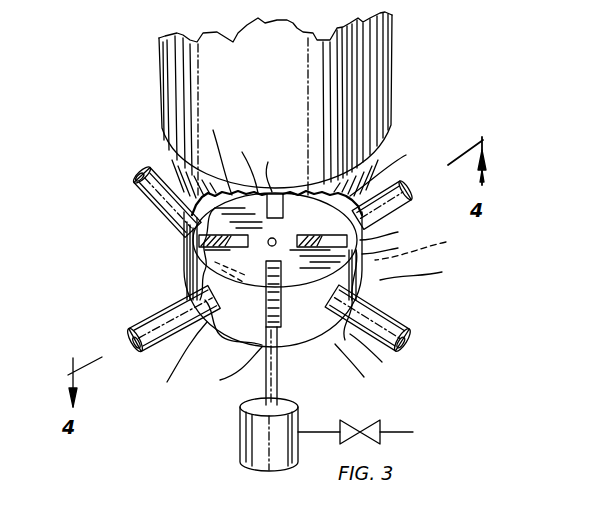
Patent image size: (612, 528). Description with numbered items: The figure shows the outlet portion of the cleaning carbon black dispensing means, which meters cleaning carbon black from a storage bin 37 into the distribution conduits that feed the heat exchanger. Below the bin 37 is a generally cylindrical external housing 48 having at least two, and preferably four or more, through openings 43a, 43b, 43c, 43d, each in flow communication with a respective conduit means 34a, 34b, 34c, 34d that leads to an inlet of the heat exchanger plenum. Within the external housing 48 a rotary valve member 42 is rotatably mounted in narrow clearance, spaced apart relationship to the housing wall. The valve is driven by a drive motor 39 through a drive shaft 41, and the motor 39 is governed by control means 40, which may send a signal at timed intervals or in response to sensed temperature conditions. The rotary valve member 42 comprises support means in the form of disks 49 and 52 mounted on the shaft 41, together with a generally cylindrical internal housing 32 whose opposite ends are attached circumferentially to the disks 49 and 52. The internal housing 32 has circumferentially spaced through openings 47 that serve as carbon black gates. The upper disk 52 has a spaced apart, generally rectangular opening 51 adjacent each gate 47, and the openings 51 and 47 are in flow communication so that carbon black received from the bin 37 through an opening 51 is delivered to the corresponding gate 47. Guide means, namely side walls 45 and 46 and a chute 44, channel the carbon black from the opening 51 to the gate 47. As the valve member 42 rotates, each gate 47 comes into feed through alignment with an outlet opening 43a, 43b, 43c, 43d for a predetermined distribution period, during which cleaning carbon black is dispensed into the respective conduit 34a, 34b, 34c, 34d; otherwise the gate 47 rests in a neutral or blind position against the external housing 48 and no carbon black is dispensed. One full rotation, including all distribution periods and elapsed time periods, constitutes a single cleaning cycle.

The internal housing 32 is at (363, 368).
The conduit means 34a is at (130, 330).
The conduit means 34b is at (392, 317).
The conduit means 34c is at (400, 190).
The conduit means 34d is at (152, 208).
The bin 37 is at (392, 82).
The drive motor 39 is at (240, 433).
The control means 40 is at (385, 427).
The drive shaft 41 is at (275, 240).
The rotary valve member 42 is at (252, 300).
The through opening 43a is at (168, 360).
The through opening 43b is at (430, 268).
The through opening 43c is at (427, 245).
The through opening 43d is at (220, 149).
The chute 44 is at (199, 245).
The side wall 45 is at (342, 256).
The side wall 46 is at (308, 312).
The through opening 47 is at (293, 190).
The external housing 48 is at (184, 264).
The disk 49 is at (292, 336).
The opening 51 is at (328, 166).
The disk 52 is at (392, 229).